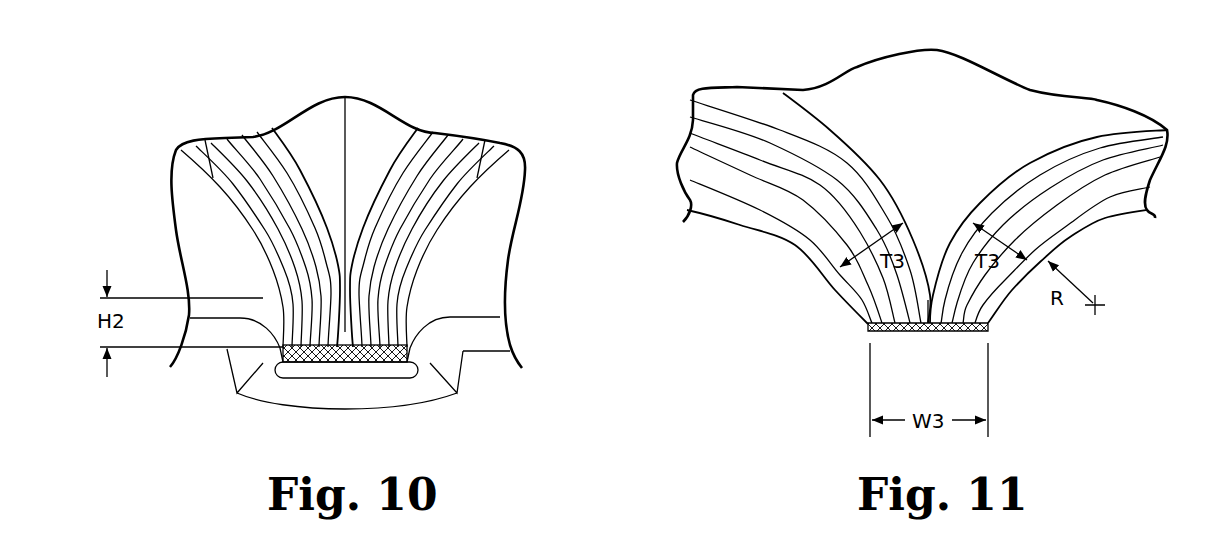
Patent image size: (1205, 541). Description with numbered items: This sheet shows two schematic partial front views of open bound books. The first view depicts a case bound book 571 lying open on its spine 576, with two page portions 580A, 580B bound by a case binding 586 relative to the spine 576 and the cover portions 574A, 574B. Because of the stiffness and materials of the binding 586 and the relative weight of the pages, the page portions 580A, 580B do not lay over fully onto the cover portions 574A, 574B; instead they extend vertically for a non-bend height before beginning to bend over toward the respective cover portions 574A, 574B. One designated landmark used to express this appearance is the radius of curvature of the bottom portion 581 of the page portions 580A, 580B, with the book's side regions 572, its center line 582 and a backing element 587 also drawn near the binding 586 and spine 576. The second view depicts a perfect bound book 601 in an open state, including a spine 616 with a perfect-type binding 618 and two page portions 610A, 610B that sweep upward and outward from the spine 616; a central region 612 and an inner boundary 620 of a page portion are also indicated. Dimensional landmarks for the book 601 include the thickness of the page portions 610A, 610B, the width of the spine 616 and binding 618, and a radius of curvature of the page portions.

In FIG. 10, the book 571 is at (377, 118).
In FIG. 10, the side wall 572 is at (228, 249).
In FIG. 10, the cover portion 574A is at (208, 349).
In FIG. 10, the cover portion 574B is at (483, 346).
In FIG. 10, the spine 576 is at (420, 406).
In FIG. 10, the page portion 580A is at (252, 160).
In FIG. 10, the page portion 580B is at (440, 157).
In FIG. 10, the bottom portion 581 is at (190, 143).
In FIG. 10, the center line 582 is at (339, 117).
In FIG. 10, the case binding 586 is at (310, 362).
In FIG. 10, the backing strip 587 is at (373, 372).
In FIG. 11, the perfect bound book 601 is at (1060, 116).
In FIG. 11, the central body 612 is at (1002, 139).
In FIG. 11, the page portion 610A is at (740, 190).
In FIG. 11, the page portion 610B is at (1121, 210).
In FIG. 11, the inner boundary 620 is at (831, 124).
In FIG. 11, the spine 616 is at (863, 336).
In FIG. 11, the perfect-type binding 618 is at (957, 332).